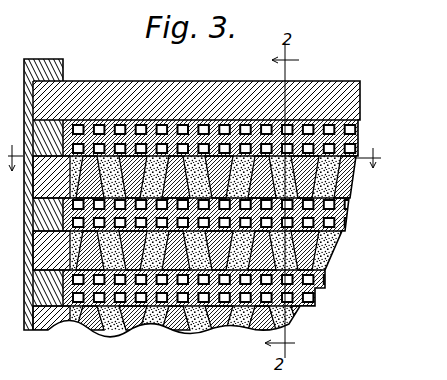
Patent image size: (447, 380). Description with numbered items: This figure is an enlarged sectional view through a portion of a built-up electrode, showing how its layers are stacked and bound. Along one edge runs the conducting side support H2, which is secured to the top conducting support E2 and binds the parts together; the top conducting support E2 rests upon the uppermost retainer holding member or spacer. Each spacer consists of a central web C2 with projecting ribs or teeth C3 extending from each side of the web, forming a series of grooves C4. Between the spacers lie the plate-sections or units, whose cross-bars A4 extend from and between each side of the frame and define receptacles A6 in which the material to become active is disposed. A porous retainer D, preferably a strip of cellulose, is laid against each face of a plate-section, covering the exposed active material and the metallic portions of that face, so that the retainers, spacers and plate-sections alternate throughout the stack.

The conducting side support H2 is at (38, 50).
The top conducting support E2 is at (322, 83).
The central web C2 is at (304, 117).
The projecting ribs or teeth C3 is at (101, 117).
The grooves C4 is at (113, 119).
The cross-bars A4 is at (355, 176).
The receptacles A6 is at (351, 140).
The porous retainer D is at (350, 148).